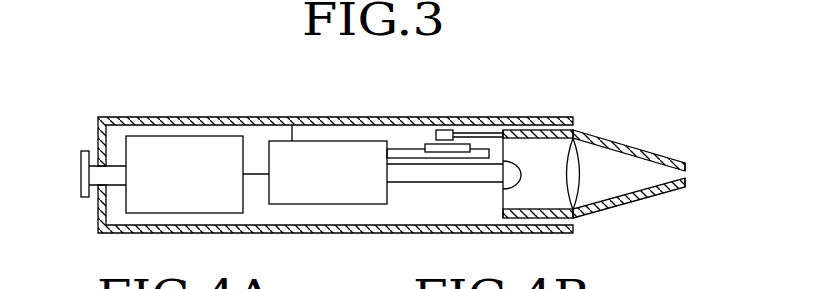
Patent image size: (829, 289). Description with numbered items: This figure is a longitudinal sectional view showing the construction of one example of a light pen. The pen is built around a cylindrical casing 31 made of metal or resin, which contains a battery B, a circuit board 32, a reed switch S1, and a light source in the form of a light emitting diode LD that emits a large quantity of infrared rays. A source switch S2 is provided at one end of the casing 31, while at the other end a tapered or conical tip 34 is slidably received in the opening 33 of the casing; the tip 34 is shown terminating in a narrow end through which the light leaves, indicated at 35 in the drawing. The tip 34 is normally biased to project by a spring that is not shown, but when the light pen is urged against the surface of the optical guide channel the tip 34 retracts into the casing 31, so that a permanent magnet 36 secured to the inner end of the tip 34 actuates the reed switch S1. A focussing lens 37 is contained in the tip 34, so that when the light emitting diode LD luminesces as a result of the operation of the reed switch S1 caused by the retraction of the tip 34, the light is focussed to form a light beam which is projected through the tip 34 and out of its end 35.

The battery B is at (182, 136).
The cylindrical casing 31 is at (263, 117).
The circuit board 32 is at (341, 141).
The opening 33 is at (575, 220).
The tapered tip 34 is at (643, 199).
The light emitting opening 35 is at (684, 170).
The permanent magnet 36 is at (445, 130).
The focussing lens 37 is at (579, 167).
The light emitting diode LD is at (519, 168).
The reed switch S1 is at (466, 144).
The source switch S2 is at (80, 196).